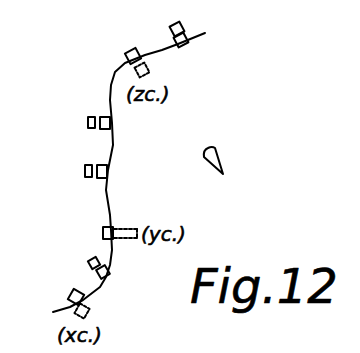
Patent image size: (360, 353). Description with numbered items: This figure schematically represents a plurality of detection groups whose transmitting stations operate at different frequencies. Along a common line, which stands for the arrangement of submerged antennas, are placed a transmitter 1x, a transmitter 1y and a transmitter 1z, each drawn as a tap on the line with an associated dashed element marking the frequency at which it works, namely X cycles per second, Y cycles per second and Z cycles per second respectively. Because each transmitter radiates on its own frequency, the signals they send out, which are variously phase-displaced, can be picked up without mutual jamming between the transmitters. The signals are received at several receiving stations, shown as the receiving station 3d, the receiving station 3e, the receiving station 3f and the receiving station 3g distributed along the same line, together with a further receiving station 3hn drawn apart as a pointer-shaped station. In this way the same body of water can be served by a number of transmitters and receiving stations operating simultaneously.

The transmitter 1z is at (129, 51).
The receiving station 3g is at (188, 52).
The receiving station 3f is at (112, 122).
The receiving station 3e is at (107, 170).
The receiving station 3hn is at (214, 146).
The transmitter 1y is at (103, 230).
The receiving station 3d is at (112, 270).
The transmitter 1x is at (77, 294).